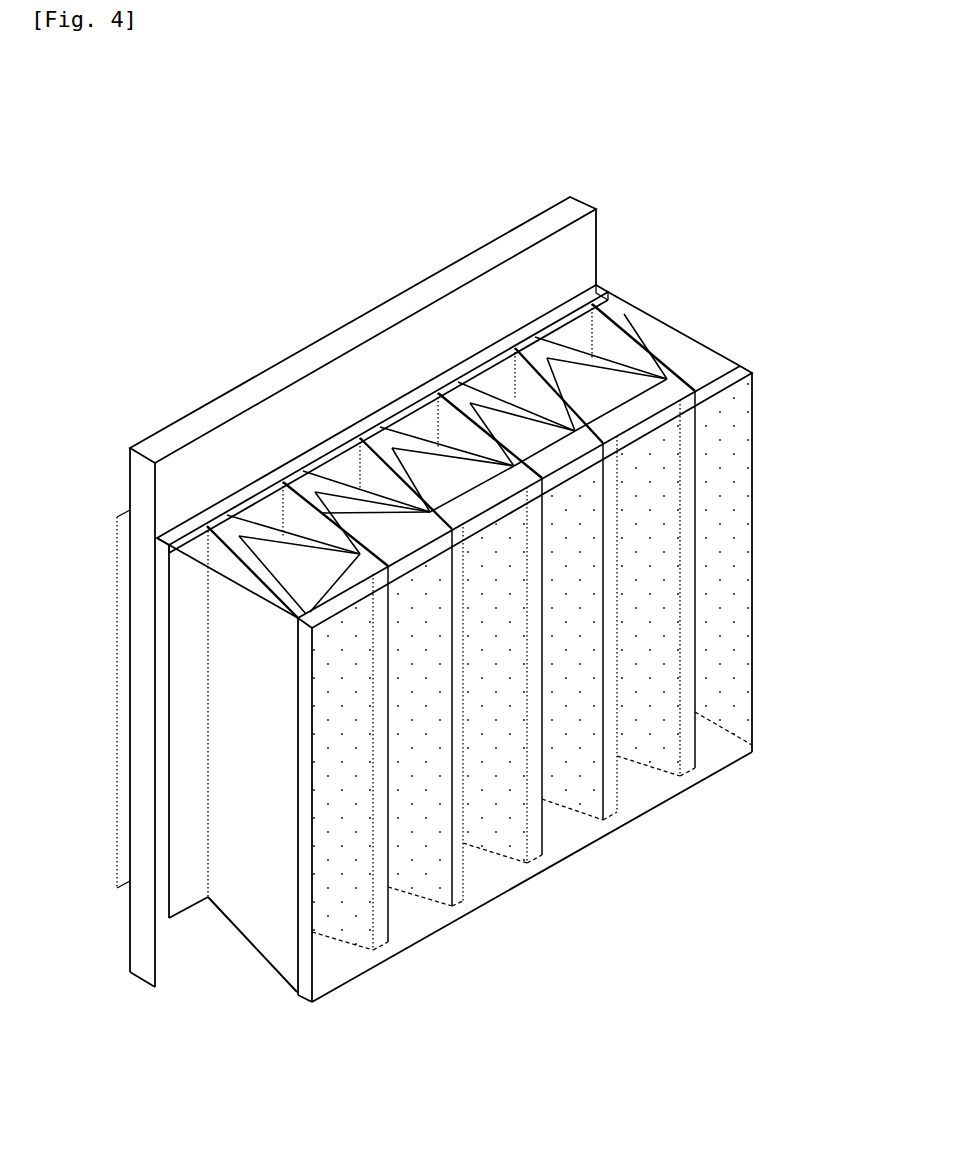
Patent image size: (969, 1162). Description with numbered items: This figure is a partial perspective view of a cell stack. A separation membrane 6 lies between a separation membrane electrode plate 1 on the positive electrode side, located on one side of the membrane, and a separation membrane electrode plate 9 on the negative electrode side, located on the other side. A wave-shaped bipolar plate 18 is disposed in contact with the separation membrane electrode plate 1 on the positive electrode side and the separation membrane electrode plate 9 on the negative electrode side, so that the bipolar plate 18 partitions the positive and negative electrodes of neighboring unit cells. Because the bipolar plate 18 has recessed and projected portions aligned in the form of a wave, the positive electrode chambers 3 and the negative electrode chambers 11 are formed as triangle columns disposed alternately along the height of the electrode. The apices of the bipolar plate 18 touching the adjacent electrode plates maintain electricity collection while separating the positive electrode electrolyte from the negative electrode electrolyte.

The separation membrane electrode plate on the positive electrode side 1 is at (487, 355).
The positive electrode chamber 3 is at (268, 515).
The separation membrane 6 is at (575, 196).
The separation membrane electrode plate on the negative electrode side 9 is at (651, 640).
The negative electrode chamber 11 is at (620, 405).
The bipolar plate 18 is at (250, 835).